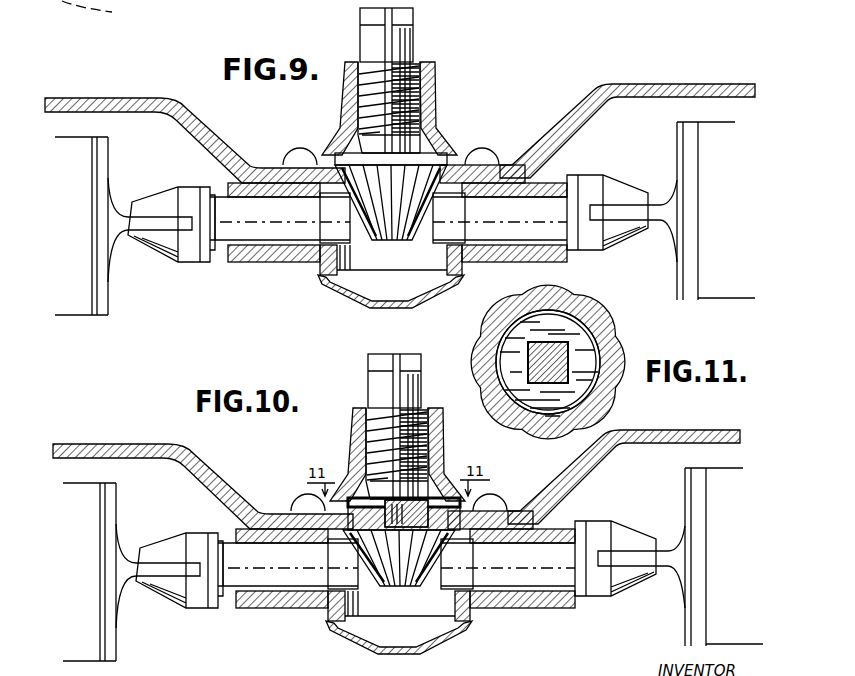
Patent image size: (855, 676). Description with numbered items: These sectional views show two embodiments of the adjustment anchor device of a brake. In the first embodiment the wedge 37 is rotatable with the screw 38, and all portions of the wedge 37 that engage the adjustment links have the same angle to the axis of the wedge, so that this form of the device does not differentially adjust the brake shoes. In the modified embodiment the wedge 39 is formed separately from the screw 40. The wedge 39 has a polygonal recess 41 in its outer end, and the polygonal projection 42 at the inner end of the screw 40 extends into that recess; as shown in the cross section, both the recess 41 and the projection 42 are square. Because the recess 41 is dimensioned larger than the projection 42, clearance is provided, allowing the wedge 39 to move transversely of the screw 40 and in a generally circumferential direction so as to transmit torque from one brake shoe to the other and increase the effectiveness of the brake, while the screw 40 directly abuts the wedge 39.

In FIG. 9, the wedge 37 is at (430, 163).
In FIG. 9, the screw 38 is at (415, 92).
In FIG. 10, the wedge 39 is at (401, 556).
In FIG. 10, the screw 40 is at (421, 426).
In FIG. 10, the polygonal recess 41 is at (370, 477).
In FIG. 11, the polygonal recess 41 is at (560, 366).
In FIG. 10, the polygonal projection 42 is at (422, 485).
In FIG. 11, the polygonal projection 42 is at (566, 344).